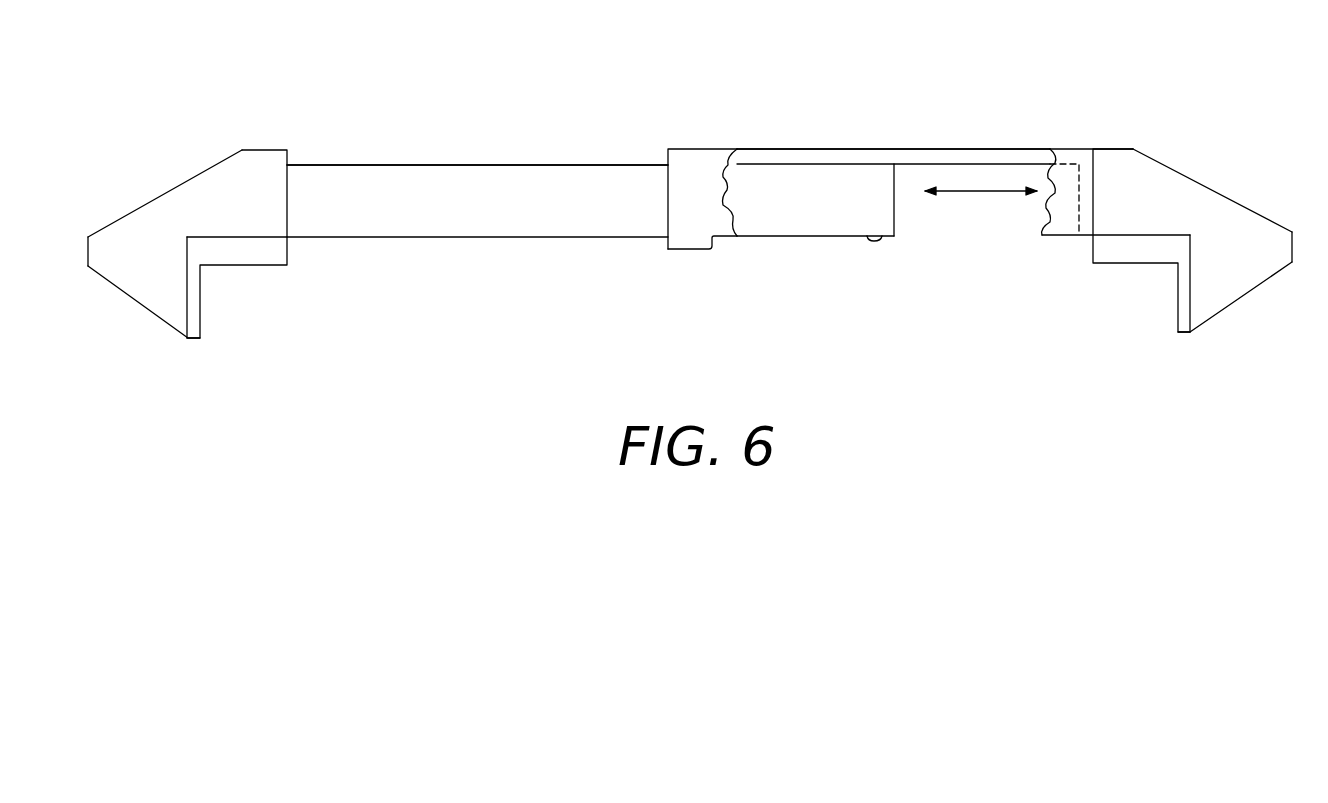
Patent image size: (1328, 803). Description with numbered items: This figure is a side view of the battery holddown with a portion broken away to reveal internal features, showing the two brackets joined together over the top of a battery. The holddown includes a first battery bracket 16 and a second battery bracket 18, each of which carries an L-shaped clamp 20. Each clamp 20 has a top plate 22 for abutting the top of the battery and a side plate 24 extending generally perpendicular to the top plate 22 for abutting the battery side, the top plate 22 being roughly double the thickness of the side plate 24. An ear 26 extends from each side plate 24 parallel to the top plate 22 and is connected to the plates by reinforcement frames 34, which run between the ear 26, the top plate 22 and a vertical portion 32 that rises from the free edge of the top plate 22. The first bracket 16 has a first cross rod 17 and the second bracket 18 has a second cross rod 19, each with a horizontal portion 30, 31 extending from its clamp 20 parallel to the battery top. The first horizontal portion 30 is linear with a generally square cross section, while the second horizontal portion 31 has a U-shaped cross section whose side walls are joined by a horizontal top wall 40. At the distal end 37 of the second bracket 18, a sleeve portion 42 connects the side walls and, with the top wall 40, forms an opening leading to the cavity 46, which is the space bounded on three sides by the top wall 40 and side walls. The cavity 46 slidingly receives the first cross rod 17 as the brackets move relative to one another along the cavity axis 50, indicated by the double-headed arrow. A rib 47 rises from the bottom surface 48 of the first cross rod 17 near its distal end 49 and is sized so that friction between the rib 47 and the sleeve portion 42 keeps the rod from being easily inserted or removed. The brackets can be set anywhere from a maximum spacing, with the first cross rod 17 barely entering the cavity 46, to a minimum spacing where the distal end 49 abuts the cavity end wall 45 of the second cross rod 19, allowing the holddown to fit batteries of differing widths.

The first battery bracket 16 is at (368, 142).
The first cross rod 17 is at (428, 163).
The second battery bracket 18 is at (988, 102).
The second cross rod 19 is at (883, 147).
The L-shaped clamp 20 is at (265, 267).
The top plate 22 is at (275, 253).
The side plate 24 is at (197, 325).
The ear 26 is at (85, 249).
The first horizontal portion 30 is at (502, 225).
The second horizontal portion 31 is at (927, 148).
The vertical portion 32 is at (268, 165).
The reinforcement frame 34 is at (143, 205).
The distal end 37 is at (668, 187).
The horizontal top wall 40 is at (758, 155).
The sleeve portion 42 is at (687, 247).
The cavity end wall 45 is at (1079, 180).
The cavity 46 is at (943, 212).
The rib 47 is at (878, 240).
The bottom surface 48 is at (788, 237).
The distal end 49 is at (897, 212).
The cavity axis 50 is at (960, 190).